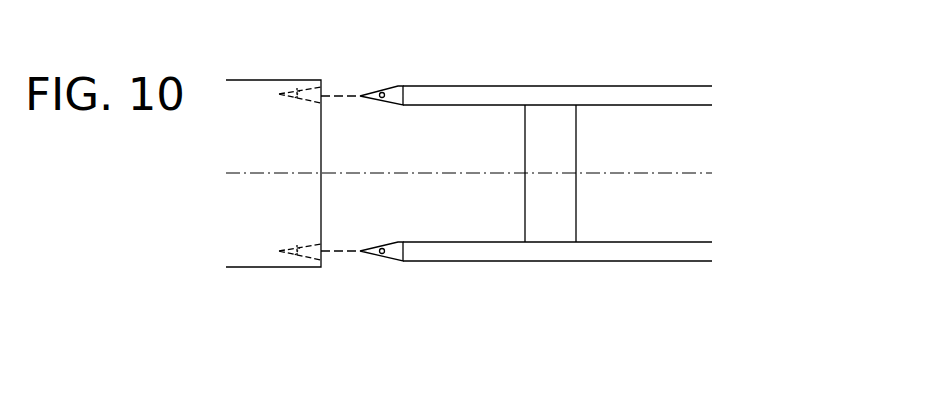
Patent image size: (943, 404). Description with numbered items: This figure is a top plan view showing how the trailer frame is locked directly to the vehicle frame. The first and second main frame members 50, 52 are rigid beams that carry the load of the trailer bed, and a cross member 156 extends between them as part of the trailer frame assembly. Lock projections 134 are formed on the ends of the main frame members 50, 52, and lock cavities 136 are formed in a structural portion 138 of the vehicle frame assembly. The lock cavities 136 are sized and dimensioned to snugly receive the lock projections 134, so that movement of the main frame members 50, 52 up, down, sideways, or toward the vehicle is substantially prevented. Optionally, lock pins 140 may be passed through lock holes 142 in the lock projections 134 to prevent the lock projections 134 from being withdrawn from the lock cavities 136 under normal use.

The structural portion 138 is at (252, 94).
The lock cavities 136 is at (312, 88).
The lock pins 140 is at (297, 90).
The lock holes 142 is at (373, 92).
The lock projections 134 is at (392, 92).
The second main frame member 52 is at (585, 92).
The first main frame member 50 is at (586, 253).
The cross member 156 is at (565, 148).